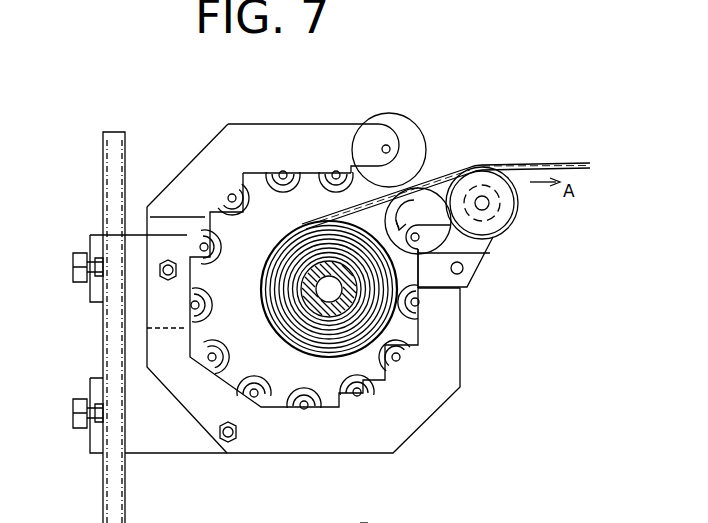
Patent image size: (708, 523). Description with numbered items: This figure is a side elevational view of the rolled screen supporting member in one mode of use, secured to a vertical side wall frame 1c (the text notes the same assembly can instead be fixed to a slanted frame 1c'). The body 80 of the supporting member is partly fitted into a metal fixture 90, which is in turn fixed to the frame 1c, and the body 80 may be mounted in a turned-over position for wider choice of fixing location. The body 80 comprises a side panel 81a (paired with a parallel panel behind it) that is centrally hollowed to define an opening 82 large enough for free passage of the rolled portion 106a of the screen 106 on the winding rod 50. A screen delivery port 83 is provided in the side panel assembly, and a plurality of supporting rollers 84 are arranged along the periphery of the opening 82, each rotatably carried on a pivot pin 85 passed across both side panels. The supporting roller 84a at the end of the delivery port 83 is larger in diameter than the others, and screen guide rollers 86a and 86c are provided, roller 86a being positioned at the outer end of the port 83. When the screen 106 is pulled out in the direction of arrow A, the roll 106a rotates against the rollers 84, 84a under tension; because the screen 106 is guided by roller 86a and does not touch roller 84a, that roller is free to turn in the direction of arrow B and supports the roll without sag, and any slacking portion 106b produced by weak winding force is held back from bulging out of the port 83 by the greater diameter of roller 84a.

The side wall frame 1c is at (116, 319).
The slanted frame 1c' is at (386, 514).
The winding rod 50 is at (276, 318).
The body of the rolled screen supporting member 80 is at (284, 118).
The side panel 81a is at (204, 152).
The opening 82 is at (246, 292).
The screen delivery port 83 is at (456, 162).
The supporting roller 84 is at (283, 192).
The large-diameter supporting roller 84a is at (423, 210).
The pivot pin 85 is at (199, 242).
The screen guide roller 86a is at (518, 207).
The screen guide roller 86c is at (399, 122).
The metal fixture 90 is at (186, 457).
The screen 106 is at (537, 163).
The rolled portion of the screen 106a is at (470, 282).
The slacking portion 106b is at (316, 193).